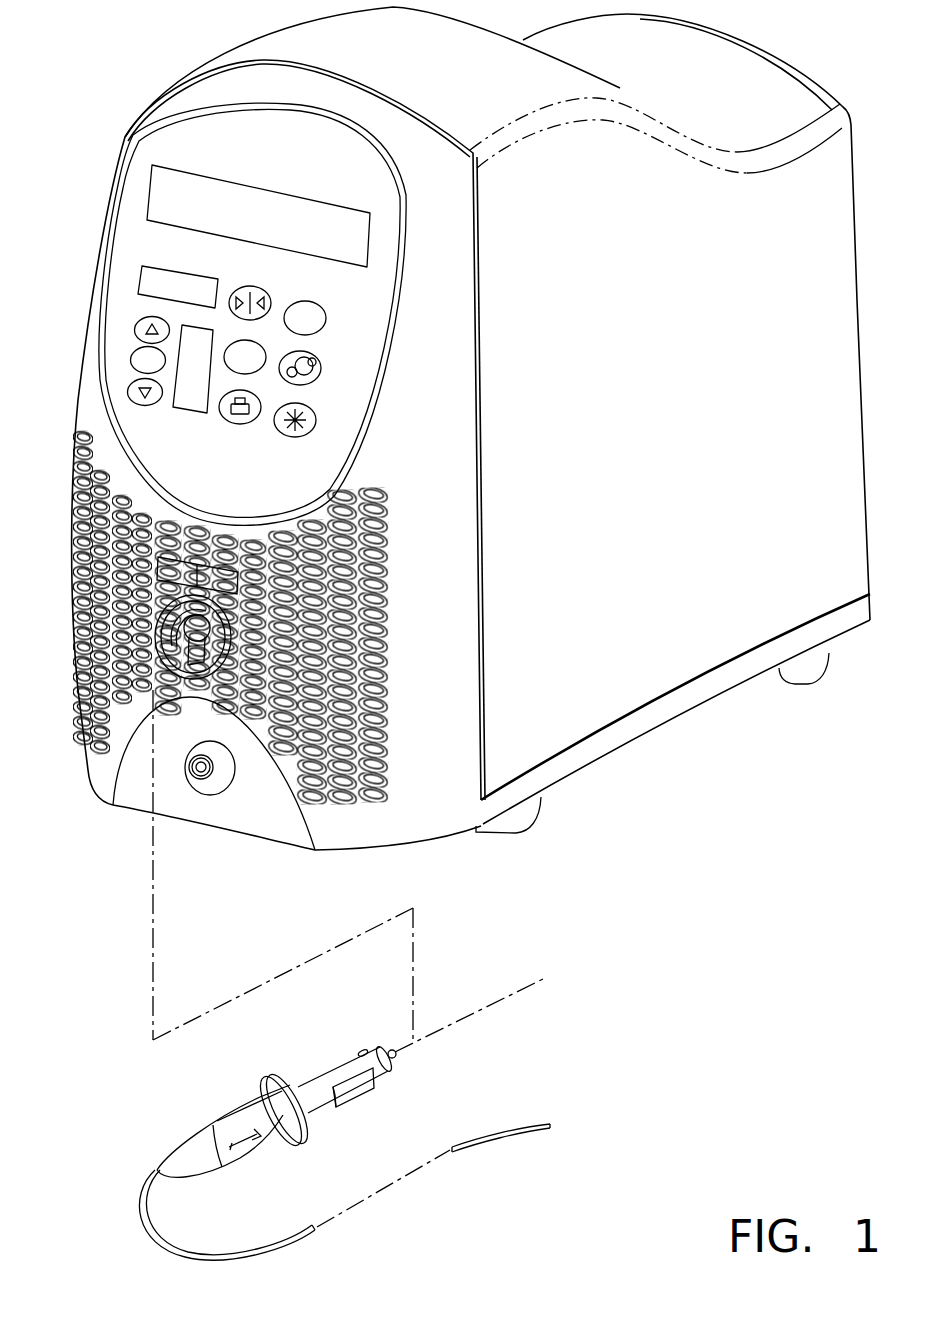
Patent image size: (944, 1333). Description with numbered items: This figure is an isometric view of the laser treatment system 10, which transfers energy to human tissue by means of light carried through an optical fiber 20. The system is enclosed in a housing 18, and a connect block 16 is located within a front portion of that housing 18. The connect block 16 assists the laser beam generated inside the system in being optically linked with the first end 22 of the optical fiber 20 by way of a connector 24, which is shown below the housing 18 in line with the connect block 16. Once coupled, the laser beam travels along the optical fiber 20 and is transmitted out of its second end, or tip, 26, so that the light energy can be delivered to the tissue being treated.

The laser treatment system 10 is at (152, 50).
The connect block 16 is at (213, 662).
The housing 18 is at (433, 830).
The optical fiber 20 is at (488, 1130).
The first end of optical fiber 22 is at (388, 1047).
The connector 24 is at (323, 1075).
The second end (tip) of optical fiber 26 is at (548, 1128).